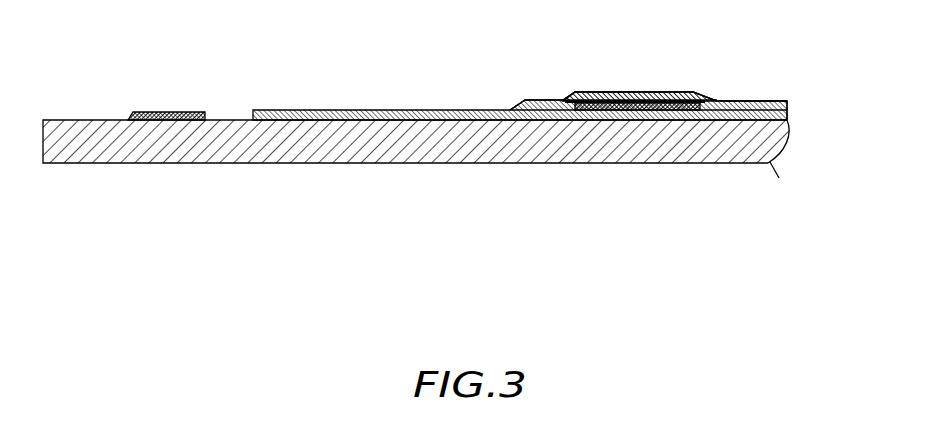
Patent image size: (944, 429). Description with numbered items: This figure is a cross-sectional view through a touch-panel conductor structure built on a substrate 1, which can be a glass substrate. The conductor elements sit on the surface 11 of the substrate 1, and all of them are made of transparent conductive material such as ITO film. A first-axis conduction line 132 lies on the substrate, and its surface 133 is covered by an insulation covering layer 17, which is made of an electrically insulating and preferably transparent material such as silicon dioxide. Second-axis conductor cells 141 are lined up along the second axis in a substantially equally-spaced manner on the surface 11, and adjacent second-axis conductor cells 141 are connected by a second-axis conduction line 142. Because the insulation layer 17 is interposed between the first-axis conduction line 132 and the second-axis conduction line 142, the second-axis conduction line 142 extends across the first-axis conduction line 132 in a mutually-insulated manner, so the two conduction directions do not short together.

The substrate 1 is at (785, 141).
The surface of the substrate 11 is at (775, 107).
The first-axis conduction line 132 is at (165, 111).
The surface of the conduction line 133 is at (627, 103).
The second-axis conductor cell 141 is at (310, 110).
The second-axis conduction line 142 is at (627, 92).
The insulation covering layer 17 is at (648, 92).